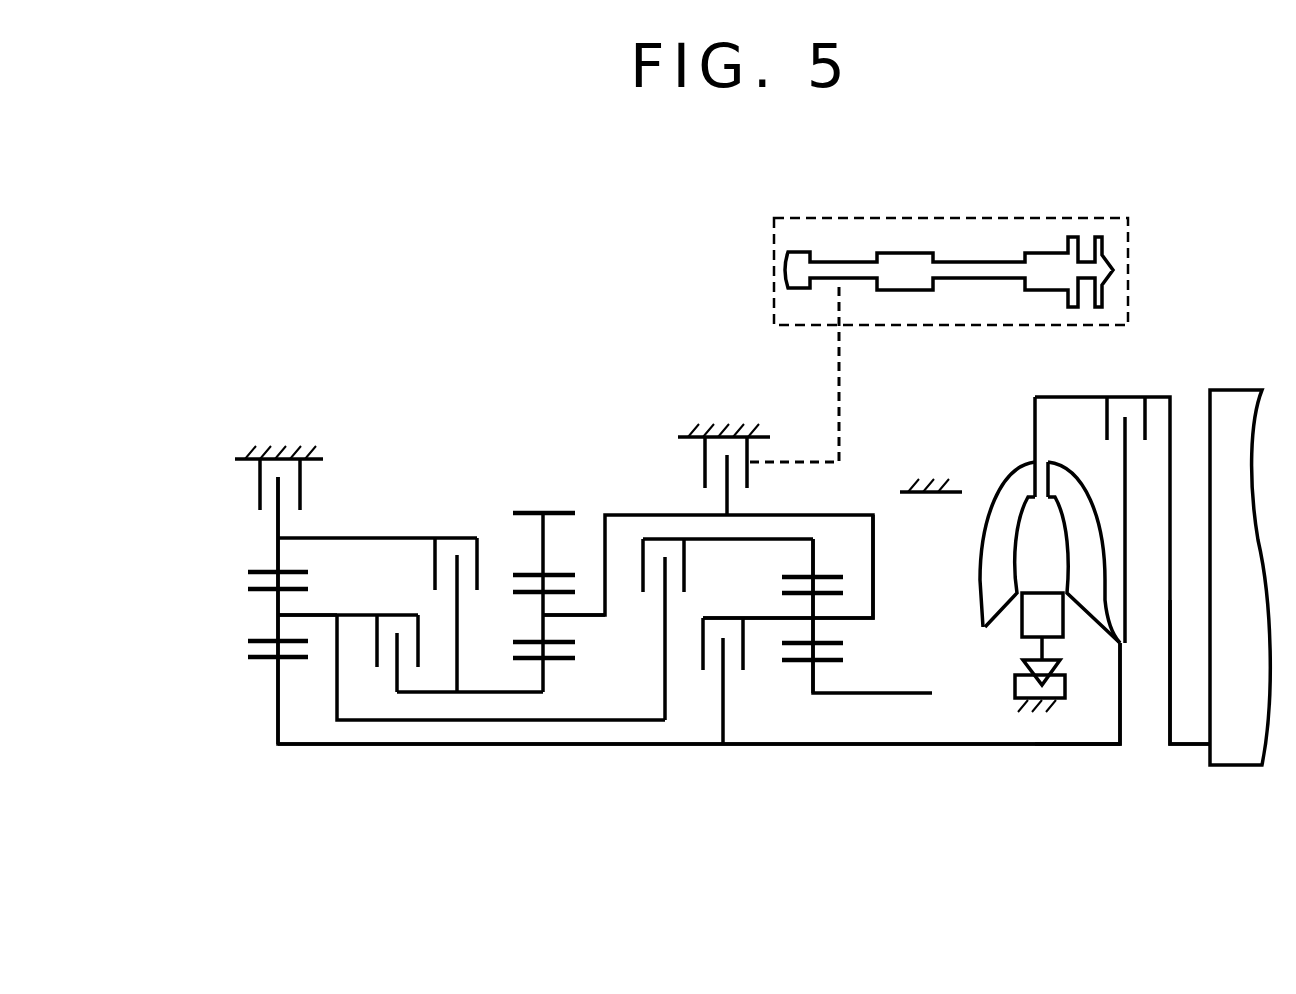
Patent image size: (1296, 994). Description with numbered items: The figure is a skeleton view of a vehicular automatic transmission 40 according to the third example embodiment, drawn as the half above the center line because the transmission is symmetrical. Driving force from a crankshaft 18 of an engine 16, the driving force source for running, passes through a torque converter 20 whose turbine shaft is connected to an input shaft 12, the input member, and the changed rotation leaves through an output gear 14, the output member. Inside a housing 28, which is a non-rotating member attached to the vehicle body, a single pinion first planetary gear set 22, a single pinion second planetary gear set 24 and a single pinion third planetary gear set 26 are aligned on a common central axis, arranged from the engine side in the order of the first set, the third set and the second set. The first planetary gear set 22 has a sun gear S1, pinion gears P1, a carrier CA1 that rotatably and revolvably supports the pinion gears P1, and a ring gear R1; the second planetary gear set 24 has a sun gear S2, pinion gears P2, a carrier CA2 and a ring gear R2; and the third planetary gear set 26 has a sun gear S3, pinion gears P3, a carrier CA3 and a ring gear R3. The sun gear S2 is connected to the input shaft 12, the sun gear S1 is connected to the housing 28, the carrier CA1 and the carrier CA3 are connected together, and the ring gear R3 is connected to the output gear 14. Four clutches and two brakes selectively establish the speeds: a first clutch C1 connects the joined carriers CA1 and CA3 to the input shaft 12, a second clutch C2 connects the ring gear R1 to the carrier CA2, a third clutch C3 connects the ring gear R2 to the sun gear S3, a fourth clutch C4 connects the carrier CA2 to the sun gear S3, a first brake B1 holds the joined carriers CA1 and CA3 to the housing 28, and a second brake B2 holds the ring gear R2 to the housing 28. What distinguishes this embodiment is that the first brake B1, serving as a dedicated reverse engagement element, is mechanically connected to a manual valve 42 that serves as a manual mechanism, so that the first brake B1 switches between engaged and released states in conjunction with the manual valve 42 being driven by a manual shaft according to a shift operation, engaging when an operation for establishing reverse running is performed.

The input shaft 12 is at (1085, 746).
The output gear 14 is at (532, 510).
The engine 16 is at (1235, 757).
The crankshaft 18 is at (1190, 748).
The torque converter 20 is at (1011, 428).
The first planetary gear set 22 is at (813, 697).
The second planetary gear set 24 is at (256, 697).
The third planetary gear set 26 is at (553, 697).
The housing 28 is at (285, 452).
The automatic transmission 40 is at (546, 340).
The manual valve 42 is at (1088, 220).
The first brake B1 is at (754, 385).
The second brake B2 is at (301, 484).
The first clutch C1 is at (723, 667).
The second clutch C2 is at (728, 629).
The third clutch C3 is at (456, 601).
The fourth clutch C4 is at (397, 639).
The ring gear R1 is at (826, 573).
The ring gear R2 is at (268, 570).
The ring gear R3 is at (548, 572).
The pinion gears P1 is at (786, 600).
The pinion gears P2 is at (262, 640).
The pinion gears P3 is at (525, 638).
The carrier CA1 is at (850, 620).
The carrier CA2 is at (305, 612).
The carrier CA3 is at (573, 618).
The sun gear S1 is at (797, 667).
The sun gear S2 is at (262, 660).
The sun gear S3 is at (548, 662).